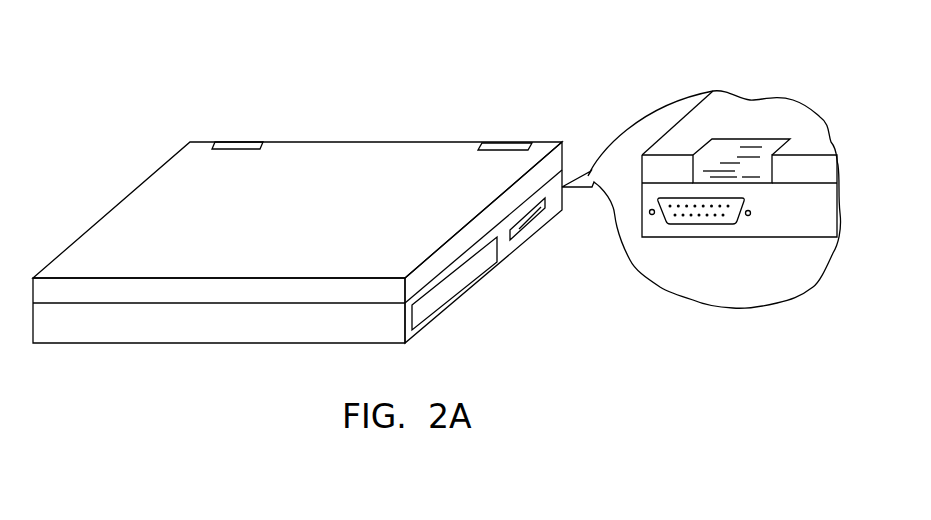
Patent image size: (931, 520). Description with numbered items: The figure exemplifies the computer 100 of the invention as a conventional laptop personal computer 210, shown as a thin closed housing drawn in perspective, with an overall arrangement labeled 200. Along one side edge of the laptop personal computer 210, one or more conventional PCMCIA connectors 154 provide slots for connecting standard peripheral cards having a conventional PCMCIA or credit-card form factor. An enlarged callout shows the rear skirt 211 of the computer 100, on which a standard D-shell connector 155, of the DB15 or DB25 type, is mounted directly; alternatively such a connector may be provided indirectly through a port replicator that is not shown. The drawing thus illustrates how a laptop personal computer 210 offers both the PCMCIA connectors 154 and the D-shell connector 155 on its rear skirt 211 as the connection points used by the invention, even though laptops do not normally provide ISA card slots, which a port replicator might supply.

The computer system 200 is at (258, 60).
The computer 100 is at (369, 126).
The conventional laptop personal computer 210 is at (427, 157).
The PCMCIA connector 154 is at (522, 225).
The D-shell connector 155 is at (697, 224).
The rear skirt 211 is at (797, 222).